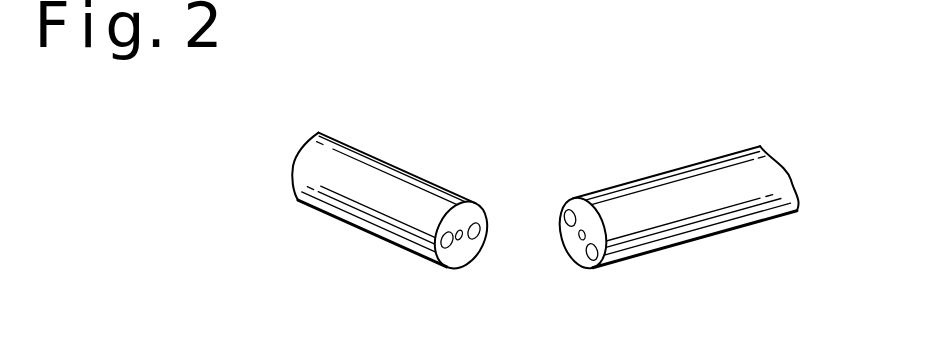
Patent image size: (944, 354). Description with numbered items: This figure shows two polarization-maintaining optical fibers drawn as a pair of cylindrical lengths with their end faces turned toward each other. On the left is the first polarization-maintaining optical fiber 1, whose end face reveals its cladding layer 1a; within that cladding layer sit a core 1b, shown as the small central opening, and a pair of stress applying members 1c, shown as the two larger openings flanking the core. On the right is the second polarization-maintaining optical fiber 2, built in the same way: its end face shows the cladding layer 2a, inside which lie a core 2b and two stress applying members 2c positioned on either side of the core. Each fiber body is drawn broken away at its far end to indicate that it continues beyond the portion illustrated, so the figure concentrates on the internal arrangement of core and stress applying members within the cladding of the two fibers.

The first polarization-maintaining optical fiber 1 is at (392, 160).
The cladding layer 1a is at (457, 217).
The core 1b is at (459, 242).
The stress applying members 1c is at (474, 227).
The second polarization-maintaining optical fiber 2 is at (651, 172).
The cladding layer 2a is at (585, 217).
The core 2b is at (583, 236).
The stress applying members 2c is at (570, 220).